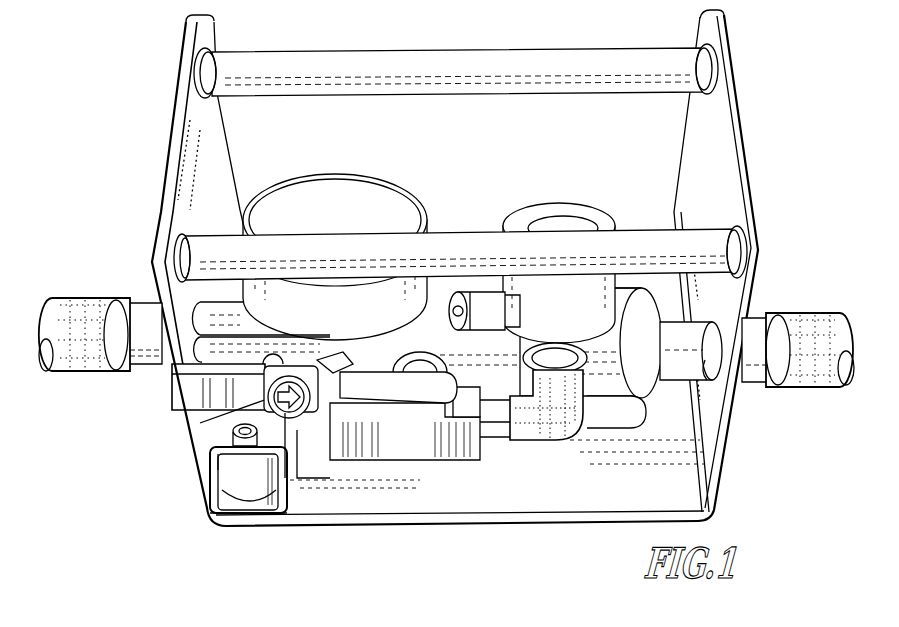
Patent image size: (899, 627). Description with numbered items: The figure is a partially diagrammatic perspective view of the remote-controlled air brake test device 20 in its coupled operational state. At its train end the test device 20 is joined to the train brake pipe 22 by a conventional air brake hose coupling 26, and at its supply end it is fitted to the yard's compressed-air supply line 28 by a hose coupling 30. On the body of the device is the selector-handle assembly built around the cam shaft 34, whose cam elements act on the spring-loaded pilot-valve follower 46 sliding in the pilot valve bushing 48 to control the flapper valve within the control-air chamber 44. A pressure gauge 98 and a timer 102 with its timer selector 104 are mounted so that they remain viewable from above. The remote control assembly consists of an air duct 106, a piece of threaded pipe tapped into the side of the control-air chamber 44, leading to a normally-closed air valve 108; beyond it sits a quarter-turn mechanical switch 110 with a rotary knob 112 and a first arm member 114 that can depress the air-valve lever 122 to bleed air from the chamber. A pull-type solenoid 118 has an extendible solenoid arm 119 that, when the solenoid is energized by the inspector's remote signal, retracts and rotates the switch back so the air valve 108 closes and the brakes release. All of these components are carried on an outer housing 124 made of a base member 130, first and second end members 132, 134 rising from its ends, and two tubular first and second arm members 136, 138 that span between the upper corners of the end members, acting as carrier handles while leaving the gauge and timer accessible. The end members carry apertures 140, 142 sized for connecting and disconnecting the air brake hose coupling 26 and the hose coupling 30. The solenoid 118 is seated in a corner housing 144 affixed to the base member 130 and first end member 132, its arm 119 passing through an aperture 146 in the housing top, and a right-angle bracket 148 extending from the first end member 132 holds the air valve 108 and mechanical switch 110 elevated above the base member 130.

The test device 20 is at (150, 56).
The train brake pipe 22 is at (72, 310).
The air brake hose coupling 26 is at (150, 317).
The compressed-air supply line 28 is at (830, 316).
The hose coupling 30 is at (762, 327).
The cam shaft 34 is at (418, 372).
The control-air chamber 44 is at (670, 405).
The pilot-valve follower 46 is at (477, 297).
The pilot valve bushing 48 is at (495, 265).
The pressure gauge 98 is at (347, 190).
The timer 102 is at (617, 230).
The timer selector 104 is at (586, 230).
The air duct 106 is at (517, 433).
The air valve 108 is at (362, 447).
The mechanical switch 110 is at (240, 398).
The rotary knob 112 is at (312, 470).
The first arm member 114 is at (362, 447).
The solenoid 118 is at (234, 488).
The solenoid arm 119 is at (236, 432).
The air-valve lever 122 is at (400, 388).
The outer housing 124 is at (178, 91).
The base member 130 is at (520, 500).
The first end member 132 is at (205, 135).
The second end member 134 is at (733, 211).
The first arm member 136 is at (294, 73).
The second arm member 138 is at (720, 240).
The aperture 140 is at (183, 394).
The aperture 142 is at (697, 392).
The corner housing 144 is at (288, 493).
The aperture 146 is at (235, 458).
The bracket 148 is at (225, 385).